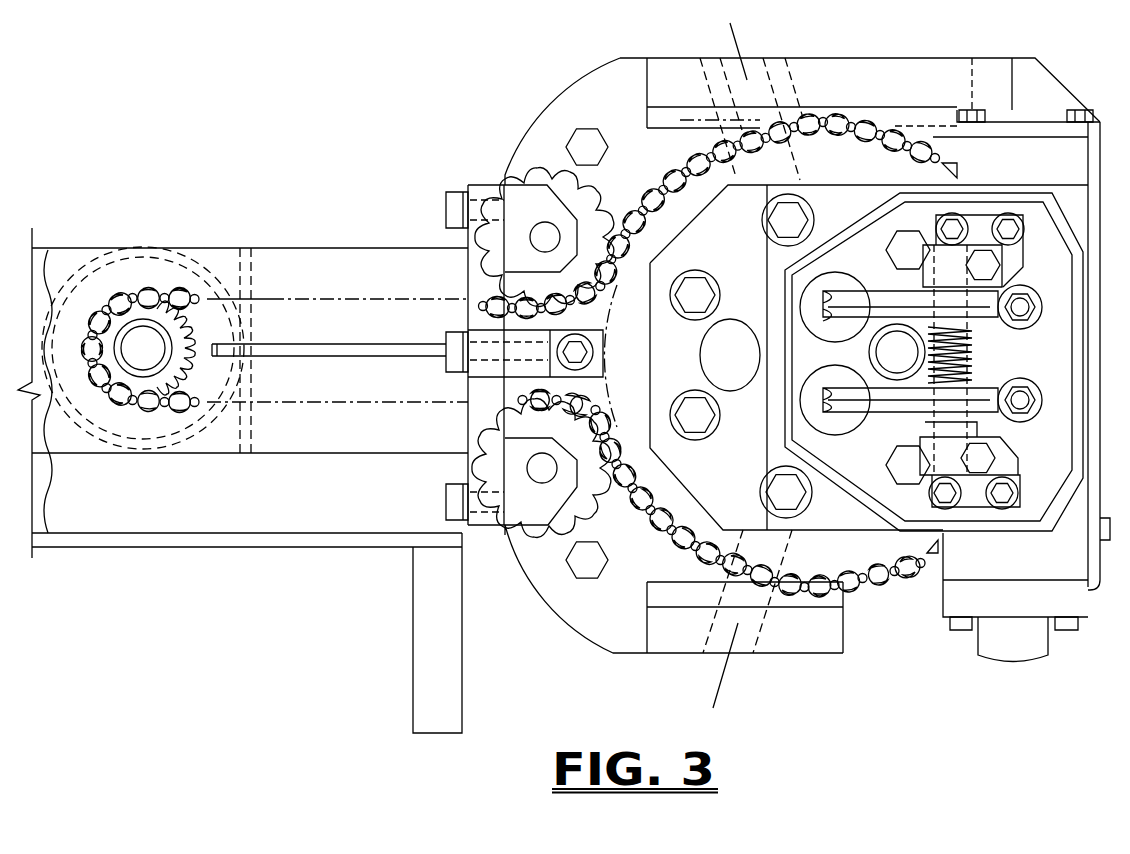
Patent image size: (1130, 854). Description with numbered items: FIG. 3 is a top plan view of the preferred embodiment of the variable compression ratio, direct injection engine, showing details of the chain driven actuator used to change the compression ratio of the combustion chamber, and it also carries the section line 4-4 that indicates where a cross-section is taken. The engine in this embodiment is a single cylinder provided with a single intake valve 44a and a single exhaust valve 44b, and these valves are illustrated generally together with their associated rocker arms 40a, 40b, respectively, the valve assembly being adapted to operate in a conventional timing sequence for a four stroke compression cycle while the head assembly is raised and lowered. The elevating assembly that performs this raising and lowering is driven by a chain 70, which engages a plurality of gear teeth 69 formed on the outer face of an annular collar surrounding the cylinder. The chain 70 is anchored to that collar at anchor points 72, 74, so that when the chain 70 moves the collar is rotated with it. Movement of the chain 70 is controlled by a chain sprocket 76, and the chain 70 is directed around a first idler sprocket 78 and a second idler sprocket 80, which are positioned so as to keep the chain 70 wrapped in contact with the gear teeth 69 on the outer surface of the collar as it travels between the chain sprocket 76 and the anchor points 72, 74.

The section line 4- 4 is at (713, 30).
The rocker arm 40a is at (978, 325).
The rocker arm 40b is at (977, 388).
The intake valve 44a is at (830, 277).
The exhaust valve 44b is at (828, 432).
The gear teeth 69 is at (745, 128).
The chain 70 is at (836, 121).
The anchor point 72 is at (955, 174).
The anchor point 74 is at (940, 548).
The chain sprocket 76 is at (156, 358).
The first idler sprocket 78 is at (547, 228).
The second idler sprocket 80 is at (540, 482).